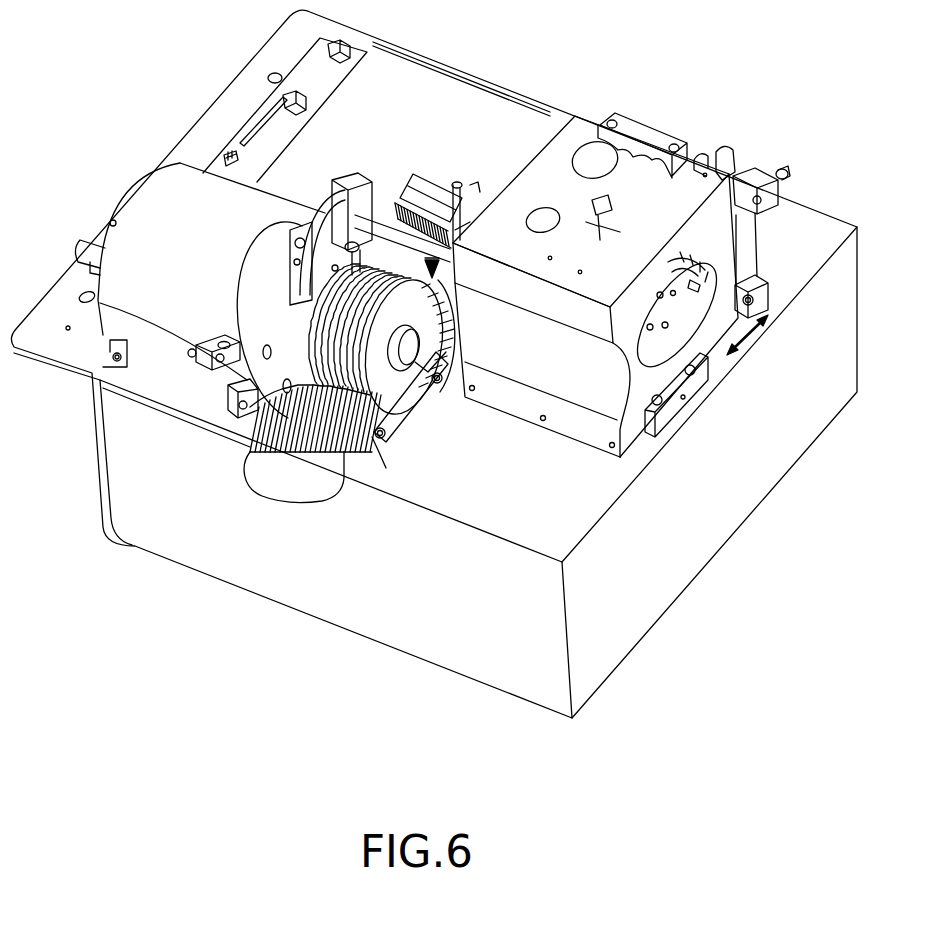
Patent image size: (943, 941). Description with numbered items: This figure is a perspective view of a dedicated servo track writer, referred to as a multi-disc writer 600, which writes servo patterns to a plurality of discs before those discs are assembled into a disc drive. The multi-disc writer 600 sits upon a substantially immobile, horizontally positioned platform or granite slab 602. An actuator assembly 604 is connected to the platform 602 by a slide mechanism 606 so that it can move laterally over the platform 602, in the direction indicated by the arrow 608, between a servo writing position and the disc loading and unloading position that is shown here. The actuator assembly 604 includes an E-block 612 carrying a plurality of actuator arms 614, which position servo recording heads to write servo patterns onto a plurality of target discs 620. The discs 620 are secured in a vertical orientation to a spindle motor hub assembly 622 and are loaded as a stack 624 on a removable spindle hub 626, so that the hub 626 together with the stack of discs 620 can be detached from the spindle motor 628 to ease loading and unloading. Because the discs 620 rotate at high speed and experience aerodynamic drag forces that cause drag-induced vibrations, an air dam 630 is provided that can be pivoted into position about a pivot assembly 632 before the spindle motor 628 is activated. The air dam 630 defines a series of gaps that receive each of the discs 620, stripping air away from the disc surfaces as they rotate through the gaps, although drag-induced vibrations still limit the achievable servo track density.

The multi-disc writer 600 is at (686, 92).
The platform 602 is at (387, 630).
The actuator assembly 604 is at (584, 105).
The slide mechanism 606 is at (767, 203).
The arrow 608 is at (760, 340).
The E-block 612 is at (427, 183).
The actuator arms 614 is at (397, 210).
The target discs 620 is at (372, 333).
The spindle motor hub assembly 622 is at (392, 482).
The stack 624 is at (453, 318).
The removable spindle hub 626 is at (410, 357).
The spindle motor 628 is at (147, 197).
The air dam 630 is at (330, 480).
The pivot assembly 632 is at (385, 432).